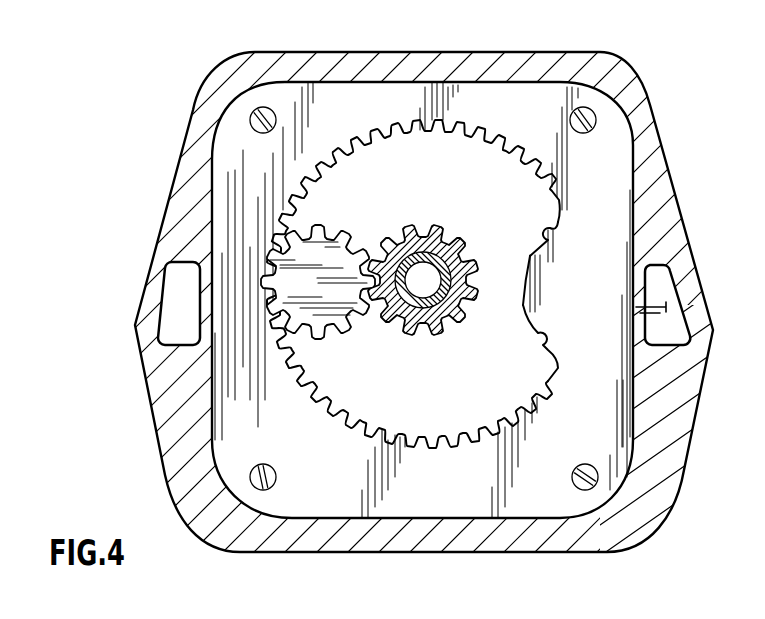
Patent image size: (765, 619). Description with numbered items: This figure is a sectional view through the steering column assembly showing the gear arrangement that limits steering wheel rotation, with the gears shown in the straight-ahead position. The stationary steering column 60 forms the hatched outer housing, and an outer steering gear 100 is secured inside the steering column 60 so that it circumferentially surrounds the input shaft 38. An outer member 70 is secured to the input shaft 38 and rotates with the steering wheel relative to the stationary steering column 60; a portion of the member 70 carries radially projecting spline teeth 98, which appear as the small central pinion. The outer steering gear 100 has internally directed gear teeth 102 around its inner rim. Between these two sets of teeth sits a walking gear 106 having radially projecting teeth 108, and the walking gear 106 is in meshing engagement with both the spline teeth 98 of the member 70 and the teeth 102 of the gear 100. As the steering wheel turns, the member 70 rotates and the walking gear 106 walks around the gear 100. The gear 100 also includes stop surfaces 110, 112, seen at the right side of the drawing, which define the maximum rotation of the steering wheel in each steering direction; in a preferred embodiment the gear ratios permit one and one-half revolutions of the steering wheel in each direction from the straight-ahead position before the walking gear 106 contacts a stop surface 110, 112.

The stationary steering column 60 is at (350, 62).
The outer steering gear 100 is at (439, 284).
The gear teeth 102 is at (435, 284).
The walking gear 106 is at (318, 266).
The teeth 108 is at (316, 226).
The outer member 70 is at (418, 232).
The spline teeth 98 is at (427, 280).
The input shaft 38 is at (395, 313).
The stop surface 110 is at (556, 236).
The stop surface 112 is at (552, 338).